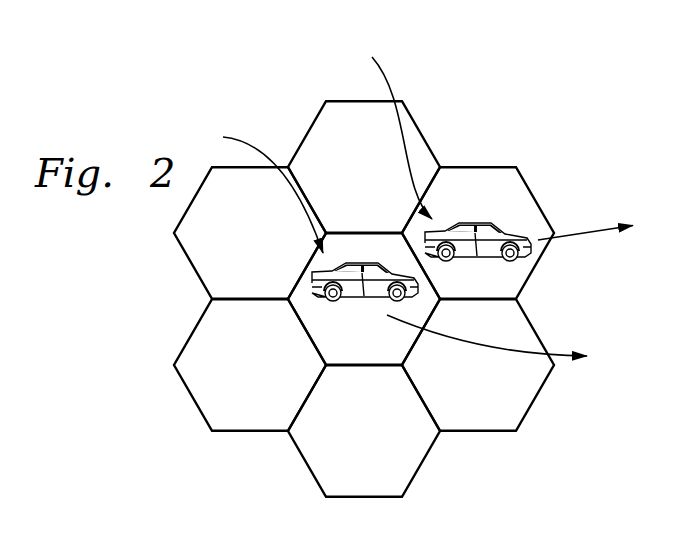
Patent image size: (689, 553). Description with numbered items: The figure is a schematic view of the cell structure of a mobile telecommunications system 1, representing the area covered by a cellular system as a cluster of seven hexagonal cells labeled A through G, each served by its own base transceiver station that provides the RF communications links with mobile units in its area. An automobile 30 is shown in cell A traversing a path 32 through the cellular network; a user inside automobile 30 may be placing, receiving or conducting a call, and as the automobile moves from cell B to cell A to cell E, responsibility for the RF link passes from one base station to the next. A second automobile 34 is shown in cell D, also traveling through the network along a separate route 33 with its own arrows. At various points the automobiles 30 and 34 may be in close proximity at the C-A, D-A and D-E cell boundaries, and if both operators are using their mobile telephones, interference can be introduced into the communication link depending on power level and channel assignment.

The mobile telecommunications system 1 is at (138, 253).
The automobile 30 is at (342, 233).
The path 32 is at (262, 150).
The mobile station path into cell D 33 is at (386, 82).
The automobile 34 is at (513, 238).